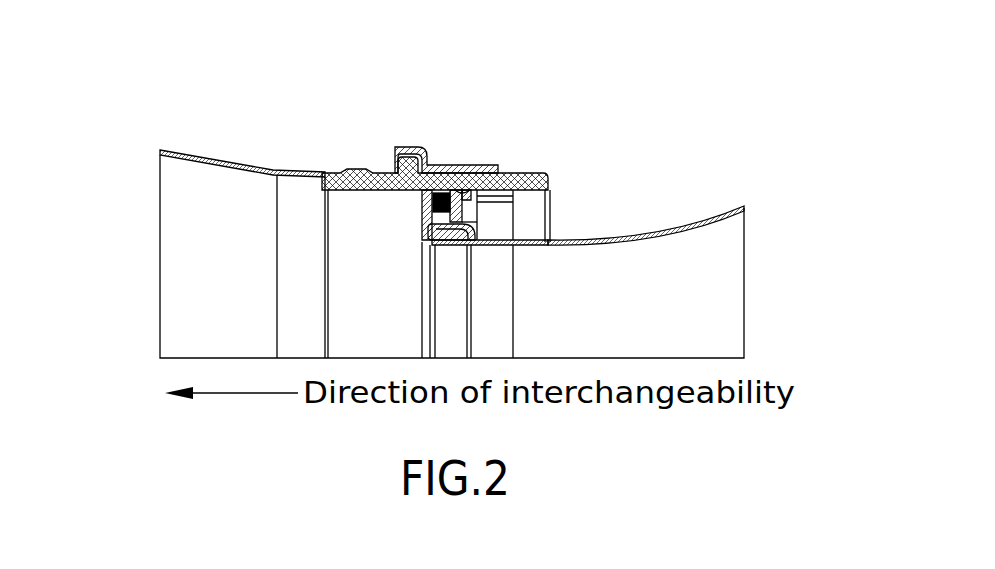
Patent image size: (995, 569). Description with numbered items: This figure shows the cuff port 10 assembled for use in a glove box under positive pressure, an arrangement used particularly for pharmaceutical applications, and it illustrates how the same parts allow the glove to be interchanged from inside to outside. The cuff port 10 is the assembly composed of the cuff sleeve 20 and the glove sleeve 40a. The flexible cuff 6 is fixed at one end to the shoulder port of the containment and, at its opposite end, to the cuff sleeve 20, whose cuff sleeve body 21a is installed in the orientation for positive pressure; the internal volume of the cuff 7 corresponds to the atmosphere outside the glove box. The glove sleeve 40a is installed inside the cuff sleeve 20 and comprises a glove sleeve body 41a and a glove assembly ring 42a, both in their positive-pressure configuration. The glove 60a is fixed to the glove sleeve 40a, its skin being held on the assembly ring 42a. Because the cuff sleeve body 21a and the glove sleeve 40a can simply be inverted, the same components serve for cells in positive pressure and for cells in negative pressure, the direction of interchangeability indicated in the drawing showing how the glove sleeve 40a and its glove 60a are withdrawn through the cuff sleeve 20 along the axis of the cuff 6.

The cuff 6 is at (180, 155).
The internal volume of the cuff 7 is at (233, 252).
The cuff port 10 is at (465, 186).
The cuff sleeve 20 is at (563, 183).
The cuff sleeve body 21a is at (317, 196).
The glove sleeve 40a is at (400, 218).
The glove sleeve body 41a is at (553, 208).
The assembly ring 42a is at (428, 240).
The glove 60a is at (715, 222).